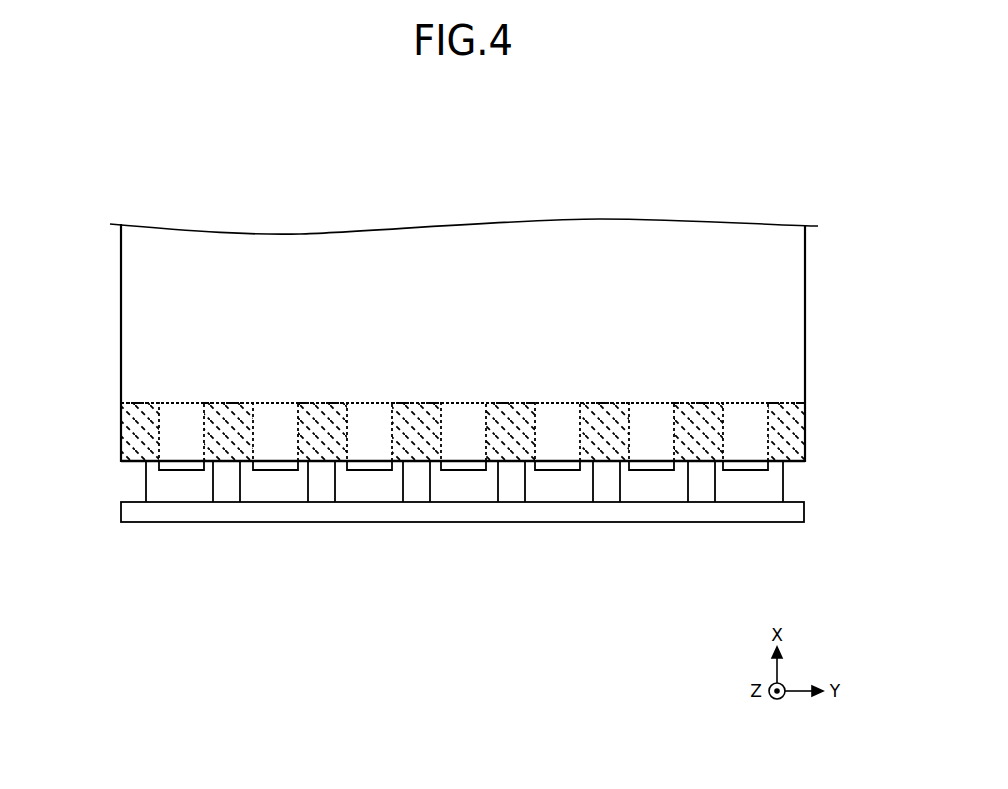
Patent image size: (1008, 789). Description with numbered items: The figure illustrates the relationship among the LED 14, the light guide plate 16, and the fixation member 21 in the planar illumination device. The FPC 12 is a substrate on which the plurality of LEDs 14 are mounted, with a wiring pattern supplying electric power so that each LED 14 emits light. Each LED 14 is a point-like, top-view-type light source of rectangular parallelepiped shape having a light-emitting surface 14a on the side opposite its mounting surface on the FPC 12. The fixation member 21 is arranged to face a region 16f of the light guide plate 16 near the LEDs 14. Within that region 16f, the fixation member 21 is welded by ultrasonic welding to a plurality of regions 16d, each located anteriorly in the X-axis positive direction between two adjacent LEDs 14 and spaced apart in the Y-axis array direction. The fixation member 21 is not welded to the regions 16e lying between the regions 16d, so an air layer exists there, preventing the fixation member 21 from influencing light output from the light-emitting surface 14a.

The FPC 12 is at (795, 512).
The LED 14 is at (183, 482).
The light-emitting surface 14a is at (758, 472).
The light guide plate 16 is at (806, 279).
The region 16d is at (148, 410).
The region 16e is at (181, 420).
The region 16f is at (810, 403).
The fixation member 21 is at (142, 404).